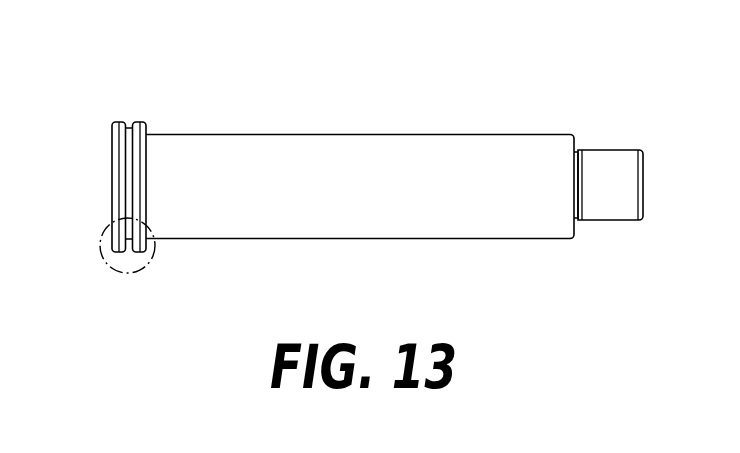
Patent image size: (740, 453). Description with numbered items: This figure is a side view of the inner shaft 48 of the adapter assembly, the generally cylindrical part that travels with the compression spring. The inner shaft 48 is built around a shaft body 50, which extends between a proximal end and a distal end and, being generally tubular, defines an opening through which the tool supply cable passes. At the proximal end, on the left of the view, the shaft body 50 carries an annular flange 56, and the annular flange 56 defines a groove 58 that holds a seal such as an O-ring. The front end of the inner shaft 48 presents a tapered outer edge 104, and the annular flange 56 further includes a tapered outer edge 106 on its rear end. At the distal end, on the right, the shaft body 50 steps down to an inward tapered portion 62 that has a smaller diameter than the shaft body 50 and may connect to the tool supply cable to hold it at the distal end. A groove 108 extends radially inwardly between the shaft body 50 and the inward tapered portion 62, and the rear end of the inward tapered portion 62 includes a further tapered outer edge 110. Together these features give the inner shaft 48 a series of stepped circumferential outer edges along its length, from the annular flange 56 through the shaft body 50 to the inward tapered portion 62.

The inner shaft 48 is at (463, 81).
The shaft body 50 is at (425, 223).
The annular flange 56 is at (112, 130).
The groove 58 is at (118, 122).
The inward tapered portion 62 is at (612, 212).
The tapered outer edge 104 is at (112, 200).
The tapered outer edge 106 is at (148, 122).
The groove 108 is at (576, 230).
The tapered outer edge 110 is at (643, 160).